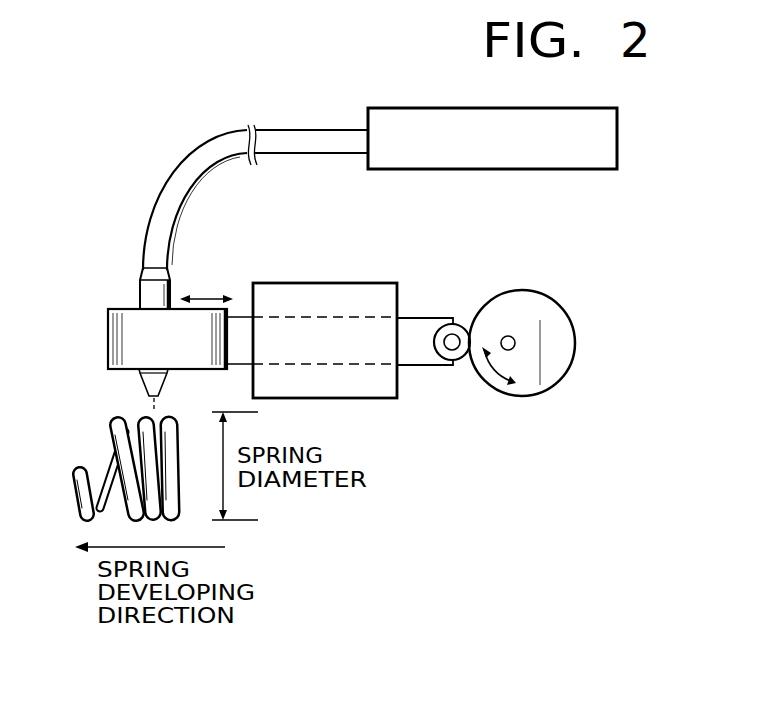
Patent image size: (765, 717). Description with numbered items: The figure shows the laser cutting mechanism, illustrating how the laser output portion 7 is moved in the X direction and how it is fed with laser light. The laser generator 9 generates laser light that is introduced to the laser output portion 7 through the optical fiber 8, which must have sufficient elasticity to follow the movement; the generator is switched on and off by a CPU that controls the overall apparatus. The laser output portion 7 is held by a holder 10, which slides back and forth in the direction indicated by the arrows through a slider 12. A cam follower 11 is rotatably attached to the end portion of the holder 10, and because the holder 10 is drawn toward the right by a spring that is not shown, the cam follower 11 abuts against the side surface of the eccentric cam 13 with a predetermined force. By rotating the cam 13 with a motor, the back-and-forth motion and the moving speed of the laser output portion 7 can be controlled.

The laser output portion 7 is at (140, 296).
The optical fiber 8 is at (300, 153).
The laser generator 9 is at (530, 169).
The holder 10 is at (108, 332).
The cam follower 11 is at (469, 331).
The slider 12 is at (363, 283).
The eccentric cam 13 is at (574, 338).